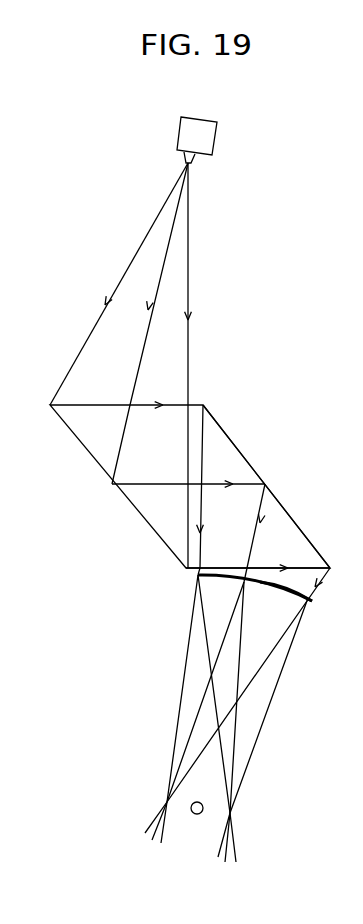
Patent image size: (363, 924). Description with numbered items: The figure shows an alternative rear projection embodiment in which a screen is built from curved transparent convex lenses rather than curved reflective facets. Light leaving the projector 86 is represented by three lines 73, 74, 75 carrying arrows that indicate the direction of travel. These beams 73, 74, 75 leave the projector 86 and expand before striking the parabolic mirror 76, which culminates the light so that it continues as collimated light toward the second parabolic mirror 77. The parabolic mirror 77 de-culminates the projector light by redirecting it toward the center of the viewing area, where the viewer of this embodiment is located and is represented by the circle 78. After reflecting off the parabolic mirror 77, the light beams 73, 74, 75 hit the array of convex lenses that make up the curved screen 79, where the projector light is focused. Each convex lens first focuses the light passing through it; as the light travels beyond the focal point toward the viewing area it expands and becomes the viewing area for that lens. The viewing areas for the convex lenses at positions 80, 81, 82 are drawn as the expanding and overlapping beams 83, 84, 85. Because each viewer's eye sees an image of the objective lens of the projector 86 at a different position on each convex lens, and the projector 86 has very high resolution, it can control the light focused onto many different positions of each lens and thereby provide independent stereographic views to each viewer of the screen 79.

The projector 86 is at (212, 152).
The light beam 73 is at (94, 333).
The light beam 74 is at (130, 392).
The light beam 75 is at (190, 350).
The parabolic mirror 76 is at (140, 520).
The parabolic mirror 77 is at (290, 496).
The convex lens position 80 is at (196, 578).
The convex lens position 81 is at (243, 565).
The curved screen of convex lenses 79 is at (283, 593).
The convex lens position 82 is at (312, 601).
The expanding beam 83 is at (198, 640).
The expanding beam 84 is at (239, 641).
The expanding beam 85 is at (280, 659).
The viewer 78 is at (192, 817).